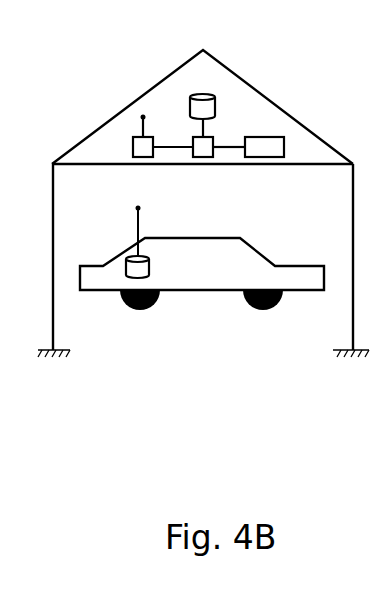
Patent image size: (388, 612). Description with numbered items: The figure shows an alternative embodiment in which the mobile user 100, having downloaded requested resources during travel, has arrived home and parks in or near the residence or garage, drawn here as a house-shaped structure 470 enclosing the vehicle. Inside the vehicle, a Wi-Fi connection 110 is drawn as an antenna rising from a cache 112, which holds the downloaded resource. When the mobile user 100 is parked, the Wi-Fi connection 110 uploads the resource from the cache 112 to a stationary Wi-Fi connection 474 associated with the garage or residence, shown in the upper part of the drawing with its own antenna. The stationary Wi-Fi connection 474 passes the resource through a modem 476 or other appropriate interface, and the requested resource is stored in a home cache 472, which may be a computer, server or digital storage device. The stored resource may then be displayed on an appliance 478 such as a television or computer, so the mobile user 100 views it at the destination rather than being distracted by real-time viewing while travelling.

The building / garage structure 470 is at (148, 90).
The home cache 472 is at (215, 108).
The stationary Wi-Fi connection 474 is at (133, 147).
The modem 476 is at (199, 158).
The appliance 478 is at (285, 147).
The mobile user 100 is at (182, 282).
The Wi-Fi connection 110 is at (133, 208).
The cache 112 is at (126, 267).